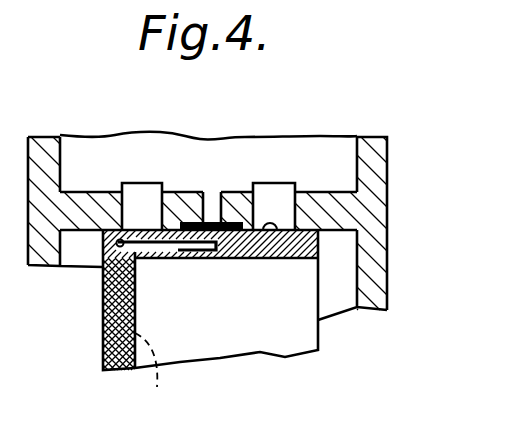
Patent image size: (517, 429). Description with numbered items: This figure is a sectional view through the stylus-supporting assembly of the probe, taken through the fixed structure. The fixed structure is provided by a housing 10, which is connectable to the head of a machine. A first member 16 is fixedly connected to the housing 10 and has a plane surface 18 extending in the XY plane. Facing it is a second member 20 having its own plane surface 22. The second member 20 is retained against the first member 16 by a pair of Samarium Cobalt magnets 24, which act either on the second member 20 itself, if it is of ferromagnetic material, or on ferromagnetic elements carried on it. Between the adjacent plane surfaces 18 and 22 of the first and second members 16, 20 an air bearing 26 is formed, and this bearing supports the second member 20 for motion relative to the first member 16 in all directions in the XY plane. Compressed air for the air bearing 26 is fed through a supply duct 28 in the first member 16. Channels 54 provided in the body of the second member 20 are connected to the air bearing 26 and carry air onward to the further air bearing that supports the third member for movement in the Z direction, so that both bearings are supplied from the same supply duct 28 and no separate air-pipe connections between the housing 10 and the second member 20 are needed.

The housing 10 is at (368, 300).
The first member 16 is at (347, 207).
The plane surface 18 is at (308, 230).
The second member 20 is at (103, 322).
The plane surface 22 is at (282, 262).
The Samarium Cobalt magnets 24 is at (283, 197).
The air bearing 26 is at (334, 243).
The supply duct 28 is at (212, 192).
The channels 54 is at (190, 262).